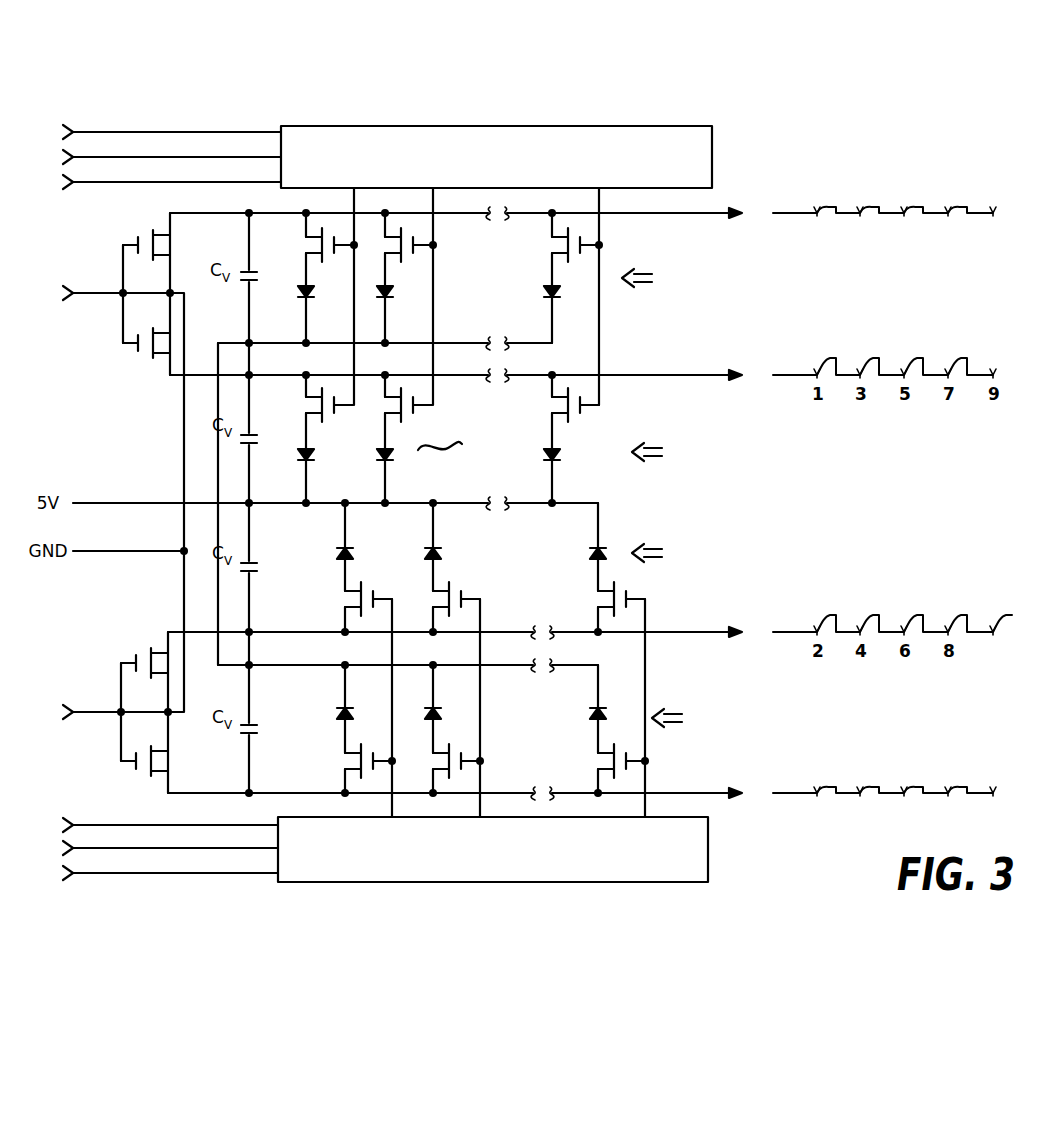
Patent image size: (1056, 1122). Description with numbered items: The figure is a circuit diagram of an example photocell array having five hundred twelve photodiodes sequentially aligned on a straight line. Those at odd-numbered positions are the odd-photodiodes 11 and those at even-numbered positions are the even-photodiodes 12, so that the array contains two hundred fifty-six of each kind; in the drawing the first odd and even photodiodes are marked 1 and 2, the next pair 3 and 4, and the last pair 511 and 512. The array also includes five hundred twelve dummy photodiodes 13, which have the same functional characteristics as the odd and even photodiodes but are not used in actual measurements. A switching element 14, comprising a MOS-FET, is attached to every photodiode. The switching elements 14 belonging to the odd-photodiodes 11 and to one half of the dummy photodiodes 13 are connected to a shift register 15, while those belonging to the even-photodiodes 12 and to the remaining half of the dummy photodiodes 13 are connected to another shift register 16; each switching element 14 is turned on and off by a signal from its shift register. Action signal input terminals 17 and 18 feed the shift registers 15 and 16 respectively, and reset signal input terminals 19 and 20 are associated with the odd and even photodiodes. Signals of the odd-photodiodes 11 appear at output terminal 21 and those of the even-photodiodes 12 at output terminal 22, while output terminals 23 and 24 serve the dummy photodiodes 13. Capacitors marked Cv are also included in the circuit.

The light emitting diode (first odd LED) 1 is at (297, 451).
The light emitting diode (first even LED) 2 is at (337, 553).
The light emitting diode 3 is at (377, 452).
The light emitting diode 4 is at (425, 553).
The light emitting diode (last odd LED) 511 is at (533, 450).
The light emitting diode (last even LED) 512 is at (581, 553).
The odd-photodiodes 11 is at (662, 452).
The even-photodiodes 12 is at (662, 553).
The dummy photodiodes 13 is at (667, 498).
The switching element 14 is at (572, 236).
The shift register 15 is at (712, 128).
The shift register 16 is at (708, 878).
The action signal input terminal 17 is at (182, 131).
The action signal input terminal 18 is at (130, 874).
The reset signal input terminal 19 is at (98, 292).
The reset signal input terminal 20 is at (98, 711).
The output terminal 21 is at (718, 376).
The output terminal 22 is at (717, 633).
The output terminal 23 is at (700, 214).
The output terminal 24 is at (723, 794).